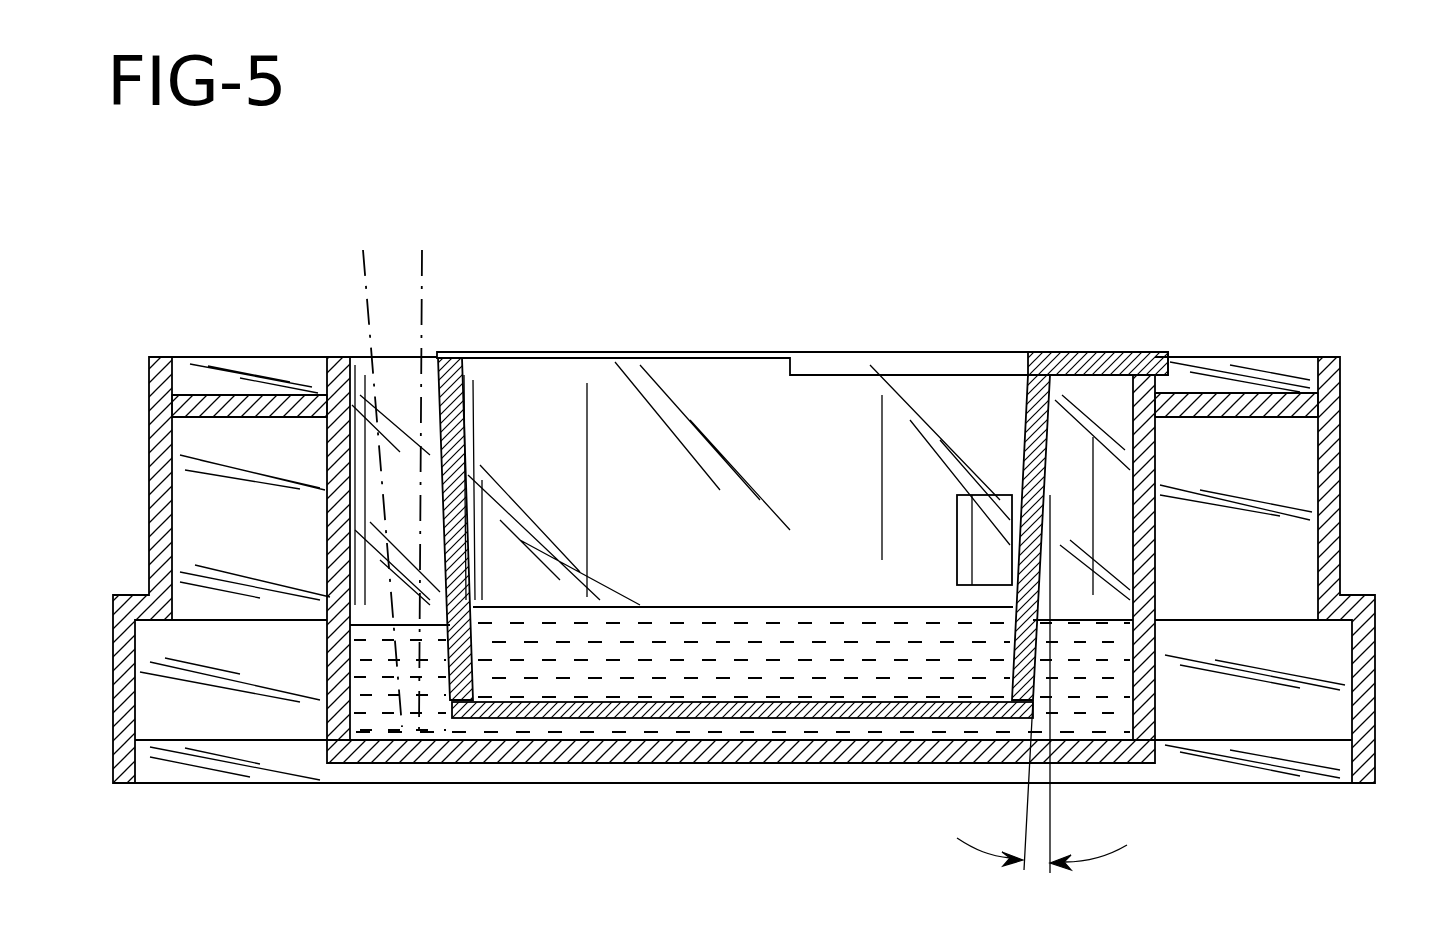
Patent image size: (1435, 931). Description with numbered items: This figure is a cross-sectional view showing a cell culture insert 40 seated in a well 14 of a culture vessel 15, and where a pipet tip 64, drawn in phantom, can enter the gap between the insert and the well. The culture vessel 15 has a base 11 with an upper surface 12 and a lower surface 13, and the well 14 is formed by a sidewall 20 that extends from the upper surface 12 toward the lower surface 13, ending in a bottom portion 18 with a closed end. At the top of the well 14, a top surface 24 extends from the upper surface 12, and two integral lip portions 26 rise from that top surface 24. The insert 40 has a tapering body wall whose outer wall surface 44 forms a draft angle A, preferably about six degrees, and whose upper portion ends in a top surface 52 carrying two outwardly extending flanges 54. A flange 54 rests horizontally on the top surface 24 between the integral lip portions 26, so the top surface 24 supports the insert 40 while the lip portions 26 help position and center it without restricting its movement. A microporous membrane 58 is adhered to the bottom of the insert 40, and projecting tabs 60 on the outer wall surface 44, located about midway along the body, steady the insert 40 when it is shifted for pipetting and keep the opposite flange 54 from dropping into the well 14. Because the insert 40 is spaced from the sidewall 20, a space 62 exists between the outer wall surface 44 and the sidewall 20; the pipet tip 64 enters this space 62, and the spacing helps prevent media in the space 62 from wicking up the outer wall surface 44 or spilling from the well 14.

The base 11 is at (185, 770).
The upper surface 12 is at (207, 393).
The lower surface 13 is at (113, 682).
The well 14 is at (350, 708).
The culture vessel 15 is at (1338, 418).
The bottom portion 18 is at (807, 747).
The sidewall 20 is at (327, 466).
The top surface 24 is at (866, 358).
The integral lip portions 26 is at (342, 357).
The cell culture insert 40 is at (592, 352).
The outer wall surface 44 is at (437, 392).
The top surface 52 is at (453, 356).
The flanges 54 is at (803, 360).
The microporous membrane 58 is at (636, 712).
The projecting tabs 60 is at (970, 495).
The space 62 is at (368, 565).
The pipet tip 64 is at (364, 270).
The draft angle A is at (1035, 863).